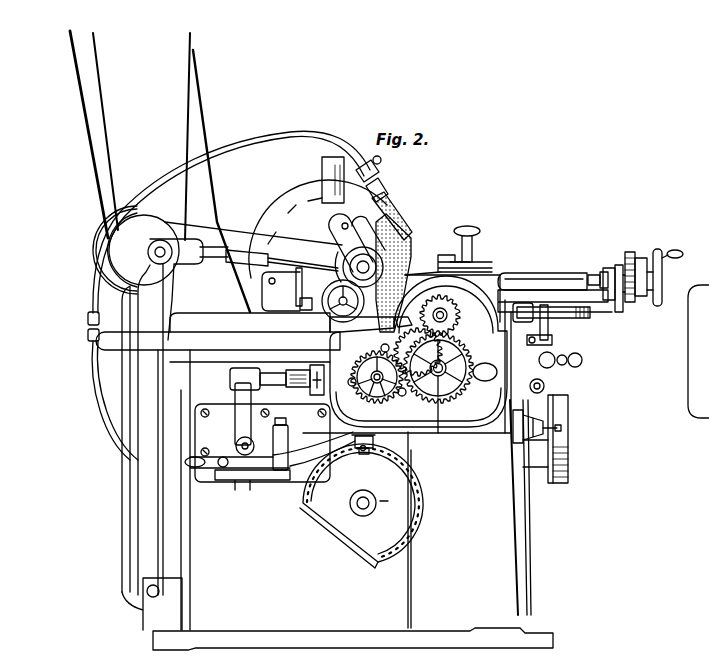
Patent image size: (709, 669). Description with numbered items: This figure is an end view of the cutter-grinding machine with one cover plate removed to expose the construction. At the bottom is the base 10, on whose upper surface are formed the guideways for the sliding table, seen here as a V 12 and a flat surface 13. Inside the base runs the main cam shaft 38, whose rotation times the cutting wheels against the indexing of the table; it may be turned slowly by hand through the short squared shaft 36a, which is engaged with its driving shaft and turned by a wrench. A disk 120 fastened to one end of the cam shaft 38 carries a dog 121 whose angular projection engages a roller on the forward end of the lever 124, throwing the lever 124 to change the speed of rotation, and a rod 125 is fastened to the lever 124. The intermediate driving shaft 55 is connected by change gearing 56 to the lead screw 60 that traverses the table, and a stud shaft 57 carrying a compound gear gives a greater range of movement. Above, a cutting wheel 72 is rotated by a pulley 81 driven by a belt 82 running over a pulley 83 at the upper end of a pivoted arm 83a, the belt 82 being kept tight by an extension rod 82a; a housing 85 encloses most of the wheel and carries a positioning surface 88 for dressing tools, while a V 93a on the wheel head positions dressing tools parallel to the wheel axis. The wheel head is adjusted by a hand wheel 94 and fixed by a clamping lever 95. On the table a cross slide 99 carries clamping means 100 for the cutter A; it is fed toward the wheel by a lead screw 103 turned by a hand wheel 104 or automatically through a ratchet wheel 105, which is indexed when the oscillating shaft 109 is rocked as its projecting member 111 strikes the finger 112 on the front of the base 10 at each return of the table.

The base 10 is at (504, 584).
The V guideway 12 is at (410, 322).
The flat surface guideway 13 is at (484, 323).
The short squared shaft 36a is at (560, 428).
The main cam shaft 38 is at (358, 510).
The intermediate driving shaft 55 is at (380, 380).
The change gearing 56 is at (443, 386).
The stud shaft 57 is at (438, 412).
The lead screw 60 is at (450, 313).
The cutting wheel 72 is at (400, 240).
The pulley 81 is at (343, 257).
The driving belt 82 is at (233, 232).
The extension rod 82a is at (210, 262).
The pulley 83 is at (145, 218).
The arm 83a is at (130, 360).
The housing 85 is at (298, 212).
The positioning surface 88 is at (324, 160).
The V 93a is at (352, 236).
The hand wheel 94 is at (334, 313).
The clamping lever 95 is at (300, 268).
The cross slide 99 is at (540, 276).
The clamping means 100 is at (463, 232).
The lead screw 103 is at (592, 275).
The hand wheel 104 is at (661, 264).
The ratchet wheel 105 is at (631, 302).
The oscillating shaft 109 is at (573, 318).
The projecting member 111 is at (552, 330).
The finger 112 is at (556, 365).
The disk 120 is at (360, 549).
The dog 121 is at (370, 454).
The lever 124 is at (300, 468).
The rod 125 is at (224, 468).
The cutter A is at (447, 270).